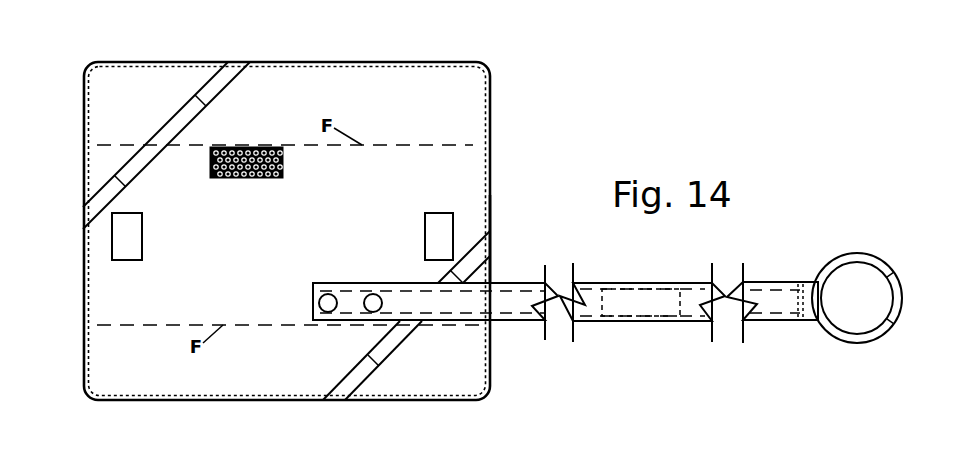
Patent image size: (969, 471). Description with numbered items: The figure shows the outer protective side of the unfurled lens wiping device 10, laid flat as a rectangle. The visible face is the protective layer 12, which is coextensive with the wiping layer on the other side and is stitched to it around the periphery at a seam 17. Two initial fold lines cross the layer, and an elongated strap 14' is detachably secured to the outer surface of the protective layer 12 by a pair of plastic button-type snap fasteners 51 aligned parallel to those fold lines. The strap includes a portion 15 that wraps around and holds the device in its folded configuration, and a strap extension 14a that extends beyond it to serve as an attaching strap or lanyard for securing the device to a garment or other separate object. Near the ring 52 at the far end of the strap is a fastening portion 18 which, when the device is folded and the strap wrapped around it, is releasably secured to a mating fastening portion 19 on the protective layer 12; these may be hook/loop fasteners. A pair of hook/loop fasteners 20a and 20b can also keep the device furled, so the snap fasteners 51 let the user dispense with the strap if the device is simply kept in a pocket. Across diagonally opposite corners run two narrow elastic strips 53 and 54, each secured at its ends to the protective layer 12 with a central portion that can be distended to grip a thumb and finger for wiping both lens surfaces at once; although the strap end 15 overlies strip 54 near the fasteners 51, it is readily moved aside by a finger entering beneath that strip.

The wiping device 10 is at (498, 165).
The protective layer 12 is at (372, 80).
The elongated strap 14' is at (642, 289).
The strap extension 14a is at (773, 283).
The strap portion 15 is at (511, 285).
The seam 17 is at (490, 210).
The fastening portion 18 is at (648, 303).
The mating fastening portion 19 is at (243, 178).
The hook/loop fastener 20a is at (117, 245).
The hook/loop fastener 20b is at (449, 229).
The snap fasteners 51 is at (372, 300).
The ring 52 is at (843, 258).
The elastic strip 53 is at (152, 152).
The elastic strip 54 is at (400, 333).